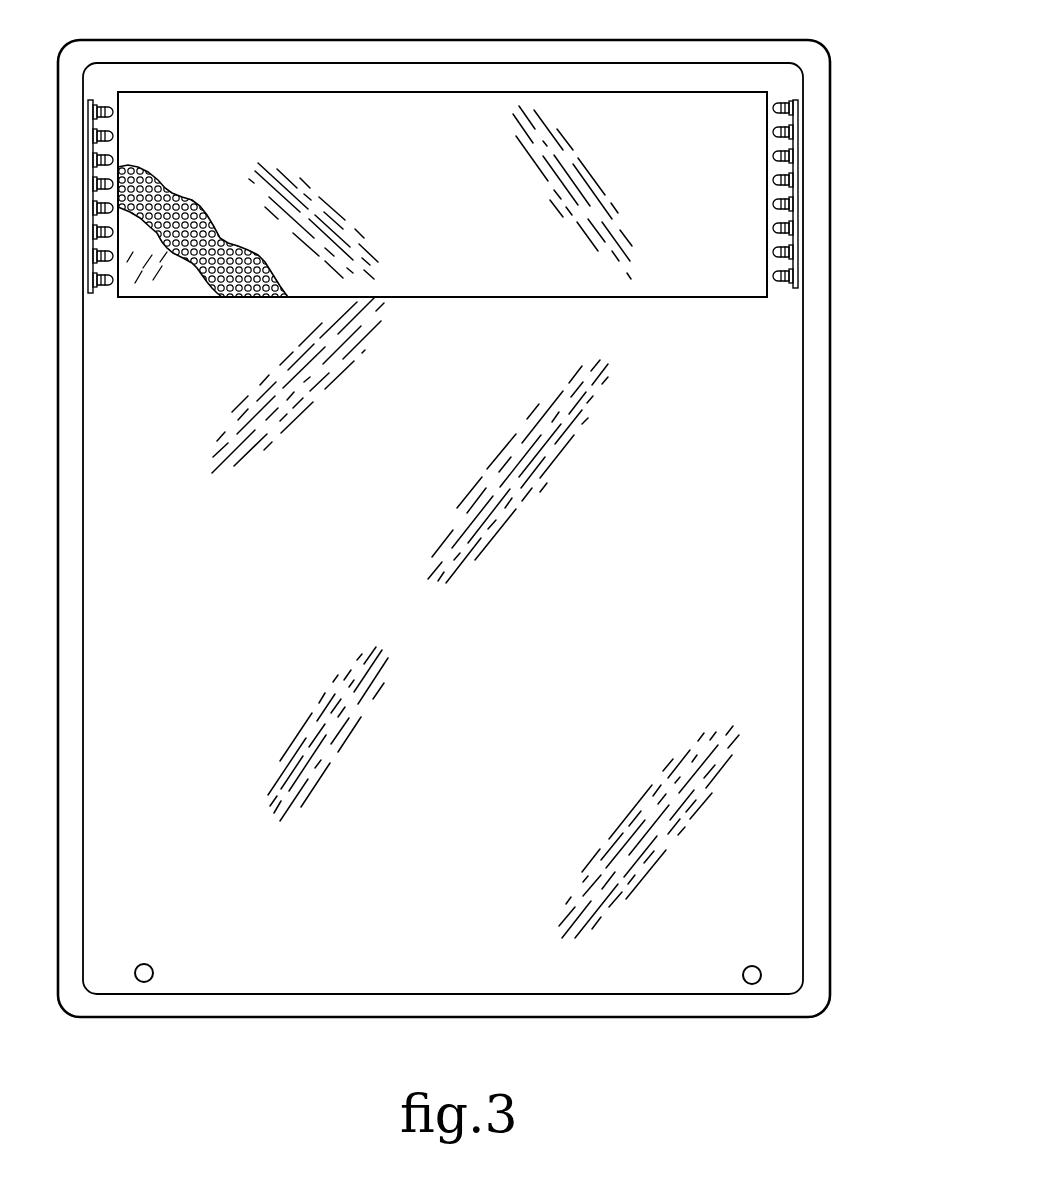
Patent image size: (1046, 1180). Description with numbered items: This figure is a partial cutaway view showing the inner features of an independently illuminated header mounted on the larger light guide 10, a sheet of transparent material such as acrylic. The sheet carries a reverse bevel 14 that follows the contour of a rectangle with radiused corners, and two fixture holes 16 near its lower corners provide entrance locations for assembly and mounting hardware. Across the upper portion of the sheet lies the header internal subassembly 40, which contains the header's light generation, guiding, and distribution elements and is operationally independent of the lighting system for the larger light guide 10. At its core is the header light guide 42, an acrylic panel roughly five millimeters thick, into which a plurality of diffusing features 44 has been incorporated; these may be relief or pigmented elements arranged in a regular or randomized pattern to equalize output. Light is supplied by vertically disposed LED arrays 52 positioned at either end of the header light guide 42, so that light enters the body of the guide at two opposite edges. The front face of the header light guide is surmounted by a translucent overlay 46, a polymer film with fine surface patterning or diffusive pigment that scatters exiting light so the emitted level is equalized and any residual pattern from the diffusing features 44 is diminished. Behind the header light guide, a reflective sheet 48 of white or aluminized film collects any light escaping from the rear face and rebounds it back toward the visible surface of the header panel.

The light guide 10 is at (828, 58).
The reverse bevel 14 is at (818, 185).
The fixture holes 16 is at (147, 963).
The header internal subassembly 40 is at (117, 301).
The header light guide 42 is at (226, 300).
The diffusing features 44 is at (163, 192).
The translucent overlay 46 is at (323, 292).
The reflective sheet 48 is at (150, 300).
The vertically disposed LED arrays 52 is at (90, 100).